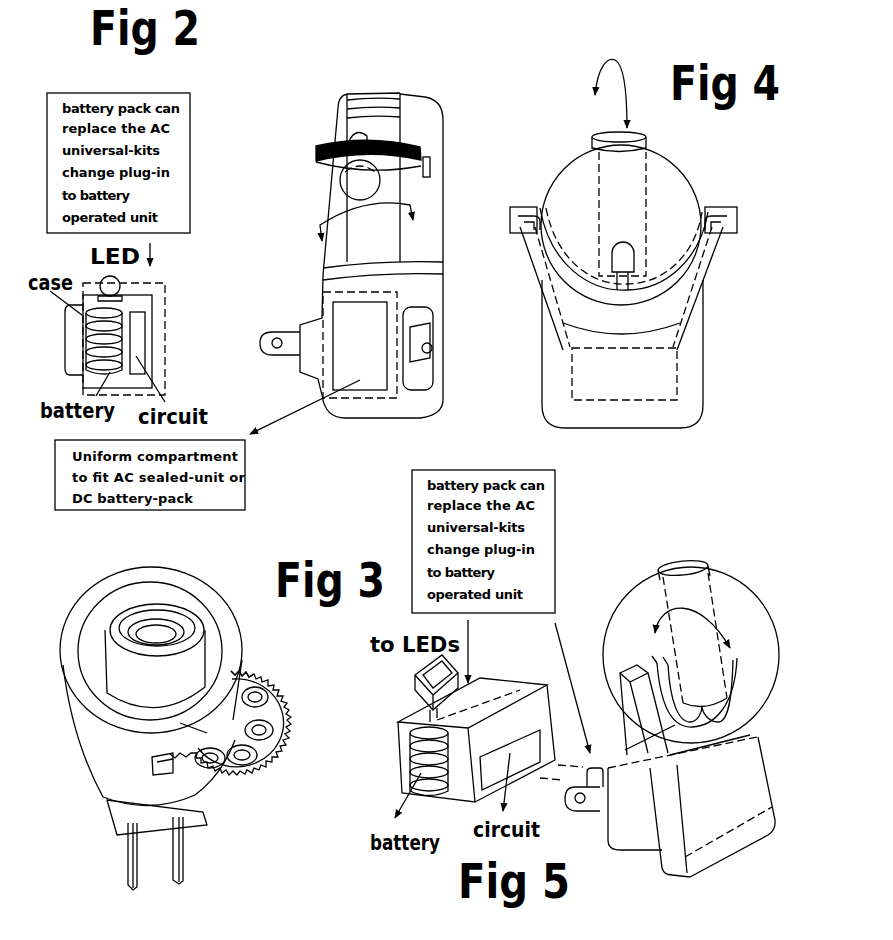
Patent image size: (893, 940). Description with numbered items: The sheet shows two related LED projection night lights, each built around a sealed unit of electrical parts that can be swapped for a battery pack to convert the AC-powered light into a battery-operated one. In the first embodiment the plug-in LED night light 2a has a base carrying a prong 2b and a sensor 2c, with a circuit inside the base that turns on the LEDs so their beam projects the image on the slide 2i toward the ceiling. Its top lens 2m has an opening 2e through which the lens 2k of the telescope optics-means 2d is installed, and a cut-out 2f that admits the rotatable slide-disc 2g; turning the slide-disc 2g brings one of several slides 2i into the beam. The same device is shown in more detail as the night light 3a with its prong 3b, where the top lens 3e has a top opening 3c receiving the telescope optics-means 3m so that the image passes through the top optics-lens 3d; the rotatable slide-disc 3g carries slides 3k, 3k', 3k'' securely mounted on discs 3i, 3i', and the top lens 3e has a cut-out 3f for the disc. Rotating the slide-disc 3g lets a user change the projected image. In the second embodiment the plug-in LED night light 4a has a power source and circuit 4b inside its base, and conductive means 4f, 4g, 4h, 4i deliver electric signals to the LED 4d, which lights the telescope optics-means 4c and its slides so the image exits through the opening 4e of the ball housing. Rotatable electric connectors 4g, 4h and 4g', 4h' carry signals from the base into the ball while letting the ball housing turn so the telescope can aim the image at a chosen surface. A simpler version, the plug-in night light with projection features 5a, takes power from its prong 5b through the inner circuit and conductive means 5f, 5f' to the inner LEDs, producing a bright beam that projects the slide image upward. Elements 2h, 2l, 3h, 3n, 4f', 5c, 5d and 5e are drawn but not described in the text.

In FIG. 2, the plug-in LED night light 2a is at (336, 312).
In FIG. 2, the prong 2b is at (288, 343).
In FIG. 2, the sensor 2c is at (433, 346).
In FIG. 2, the telescope optics-means 2d is at (367, 228).
In FIG. 2, the opening 2e is at (394, 96).
In FIG. 2, the cut-out 2f is at (352, 139).
In FIG. 2, the rotatable slide-disc 2g is at (340, 154).
In FIG. 2, the ring 2h is at (355, 182).
In FIG. 2, the slide 2i is at (392, 170).
In FIG. 2, the lens 2k is at (368, 101).
In FIG. 2, the grooves 2l is at (400, 110).
In FIG. 2, the top lens 2m is at (336, 253).
In FIG. 4, the plug-in LED night light 4a is at (557, 375).
In FIG. 4, the circuit 4b is at (669, 383).
In FIG. 4, the telescope optics-means 4c is at (632, 205).
In FIG. 4, the LED 4d is at (627, 257).
In FIG. 4, the opening 4e is at (627, 143).
In FIG. 4, the conductive means 4f is at (722, 288).
In FIG. 4, the left arm 4f' is at (525, 304).
In FIG. 4, the rotatable electric connector 4g is at (757, 213).
In FIG. 4, the rotatable electric connector 4g' is at (492, 228).
In FIG. 4, the rotatable electric connector 4h is at (744, 250).
In FIG. 4, the rotatable electric connector 4h' is at (513, 198).
In FIG. 4, the conductive means 4i is at (561, 250).
In FIG. 3, the night light 3a is at (117, 803).
In FIG. 3, the prong 3b is at (143, 862).
In FIG. 3, the top opening 3c is at (164, 603).
In FIG. 3, the top optics-lens 3d is at (178, 640).
In FIG. 3, the top lens 3e is at (105, 754).
In FIG. 3, the cut-out 3f is at (161, 770).
In FIG. 3, the rotatable slide-disc 3g is at (270, 671).
In FIG. 3, the gear disc 3h is at (258, 776).
In FIG. 3, the disc 3i is at (277, 733).
In FIG. 3, the disc 3i' is at (291, 760).
In FIG. 3, the slide 3k is at (295, 687).
In FIG. 3, the slide 3k' is at (305, 734).
In FIG. 3, the slide 3k'' is at (278, 765).
In FIG. 3, the telescope optics-means 3m is at (133, 625).
In FIG. 3, the housing rim 3n is at (193, 578).
In FIG. 5, the plug-in night light with projection features 5a is at (754, 767).
In FIG. 5, the prong 5b is at (597, 804).
In FIG. 5, the column 5c is at (628, 692).
In FIG. 5, the lens cylinder 5d is at (701, 603).
In FIG. 5, the cap 5e is at (691, 563).
In FIG. 5, the conductive means 5f is at (734, 661).
In FIG. 5, the conductive means 5f' is at (619, 629).